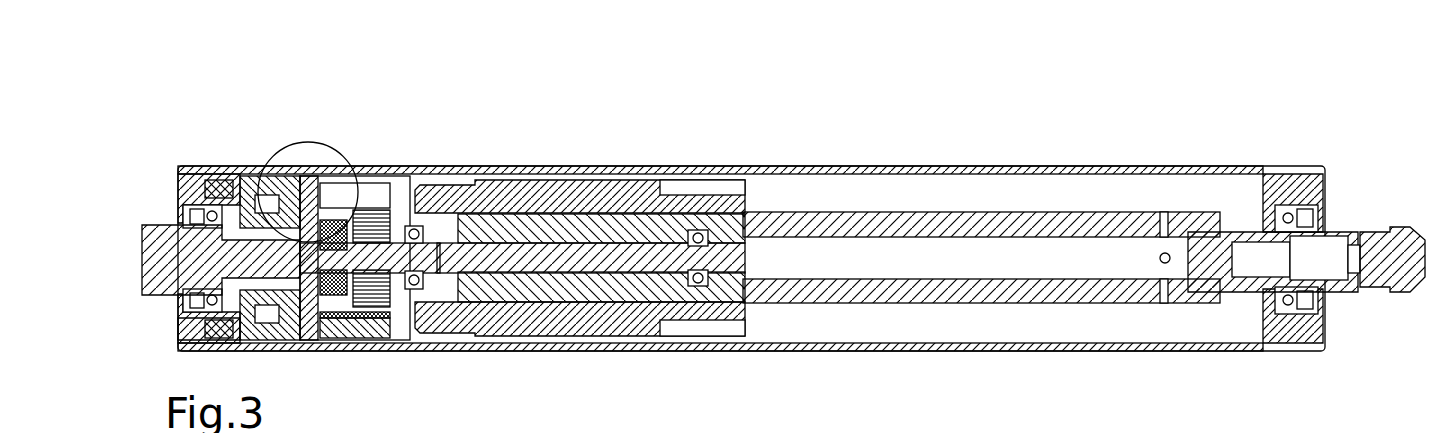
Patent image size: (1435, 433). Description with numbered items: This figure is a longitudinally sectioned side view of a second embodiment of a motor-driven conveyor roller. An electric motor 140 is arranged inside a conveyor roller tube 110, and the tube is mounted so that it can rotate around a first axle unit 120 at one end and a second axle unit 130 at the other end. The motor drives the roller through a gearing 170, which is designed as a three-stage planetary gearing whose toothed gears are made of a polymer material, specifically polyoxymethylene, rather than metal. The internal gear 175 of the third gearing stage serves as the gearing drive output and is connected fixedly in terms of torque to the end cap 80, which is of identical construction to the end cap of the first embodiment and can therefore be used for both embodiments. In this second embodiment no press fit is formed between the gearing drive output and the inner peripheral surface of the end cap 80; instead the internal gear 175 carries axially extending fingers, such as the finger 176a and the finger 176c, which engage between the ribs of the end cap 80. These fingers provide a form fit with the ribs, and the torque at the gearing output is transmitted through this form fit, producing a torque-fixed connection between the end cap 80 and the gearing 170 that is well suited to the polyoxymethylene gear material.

The end cap 80 is at (180, 327).
The conveyor roller tube 110 is at (885, 172).
The first axle unit 120 is at (163, 248).
The second axle unit 130 is at (1330, 258).
The electric motor 140 is at (572, 250).
The gearing 170 is at (370, 185).
The internal gear 175 is at (245, 188).
The axially extending finger 176a is at (216, 186).
The axially extending finger 176c is at (219, 350).